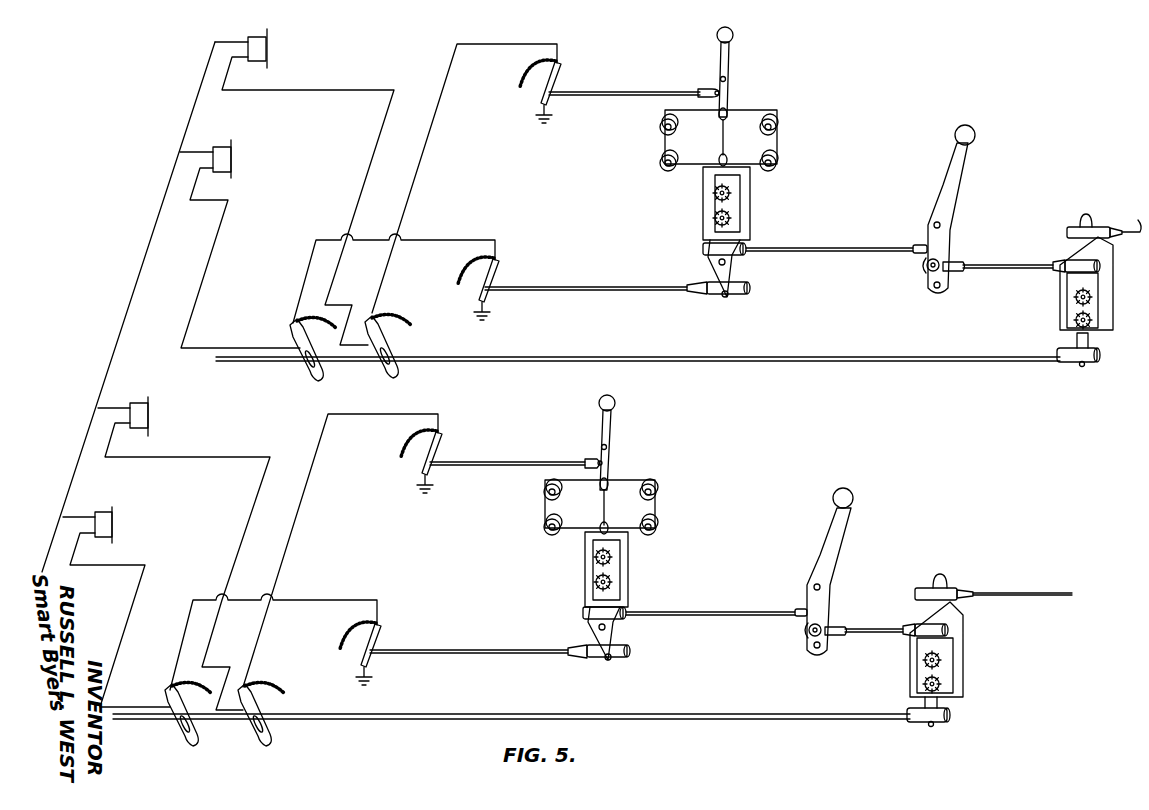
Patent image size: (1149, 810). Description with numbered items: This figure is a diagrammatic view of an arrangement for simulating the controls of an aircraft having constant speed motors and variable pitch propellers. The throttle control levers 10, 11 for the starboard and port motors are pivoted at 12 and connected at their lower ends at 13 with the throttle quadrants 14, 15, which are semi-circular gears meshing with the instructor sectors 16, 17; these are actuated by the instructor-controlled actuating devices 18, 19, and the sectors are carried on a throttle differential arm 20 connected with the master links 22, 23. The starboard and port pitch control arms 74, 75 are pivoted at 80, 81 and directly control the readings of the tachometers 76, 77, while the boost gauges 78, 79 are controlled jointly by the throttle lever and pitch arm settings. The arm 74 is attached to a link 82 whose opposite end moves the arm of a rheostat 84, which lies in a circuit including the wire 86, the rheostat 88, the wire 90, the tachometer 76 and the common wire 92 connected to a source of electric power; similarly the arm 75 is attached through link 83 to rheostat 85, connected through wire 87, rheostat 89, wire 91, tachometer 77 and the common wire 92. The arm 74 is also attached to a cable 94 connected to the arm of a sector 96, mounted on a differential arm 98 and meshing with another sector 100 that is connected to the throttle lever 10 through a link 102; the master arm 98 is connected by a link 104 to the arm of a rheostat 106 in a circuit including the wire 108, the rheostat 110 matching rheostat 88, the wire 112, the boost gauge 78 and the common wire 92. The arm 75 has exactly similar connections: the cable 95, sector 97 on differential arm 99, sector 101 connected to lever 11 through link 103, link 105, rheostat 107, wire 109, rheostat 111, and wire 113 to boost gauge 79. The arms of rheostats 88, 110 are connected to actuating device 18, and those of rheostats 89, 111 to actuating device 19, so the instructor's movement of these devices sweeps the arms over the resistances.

The throttle control lever 10 is at (955, 175).
The throttle control lever 11 is at (840, 538).
The lever pivot 12 is at (941, 225).
The lower end connection 13 is at (925, 270).
The starboard throttle quadrant 14 is at (1070, 295).
The port throttle quadrant 15 is at (947, 660).
The instructor sector 16 is at (1070, 320).
The instructor sector 17 is at (922, 684).
The actuating device 18 is at (768, 368).
The actuating device 19 is at (726, 712).
The throttle differential arm 20 is at (1053, 254).
The master link 22 is at (1106, 225).
The master link 23 is at (1012, 592).
The starboard pitch control arm 74 is at (729, 62).
The port pitch control arm 75 is at (611, 425).
The starboard tachometer 76 is at (267, 48).
The port tachometer 77 is at (148, 414).
The boost gauge 78 is at (231, 158).
The boost gauge 79 is at (112, 522).
The pivot 80 is at (726, 81).
The pivot 81 is at (607, 446).
The link 82 is at (625, 96).
The link 83 is at (520, 456).
The rheostat 84 is at (509, 86).
The rheostat 85 is at (393, 449).
The wire 86 is at (414, 188).
The wire 87 is at (300, 518).
The rheostat 88 is at (368, 320).
The rheostat 89 is at (285, 676).
The wire 90 is at (345, 89).
The wire 91 is at (243, 446).
The common wire 92 is at (128, 280).
The cable 94 is at (662, 152).
The cable 95 is at (543, 506).
The sector 96 is at (713, 193).
The sector 97 is at (594, 556).
The differential arm 98 is at (710, 270).
The differential arm 99 is at (586, 630).
The sector 100 is at (712, 220).
The sector 101 is at (594, 584).
The link 102 is at (840, 246).
The link 103 is at (707, 608).
The link 104 is at (597, 280).
The link 105 is at (480, 648).
The rheostat 106 is at (505, 262).
The rheostat 107 is at (388, 627).
The wire 108 is at (420, 240).
The wire 109 is at (308, 600).
The rheostat 110 is at (290, 322).
The rheostat 111 is at (183, 686).
The wire 112 is at (212, 257).
The wire 113 is at (140, 578).